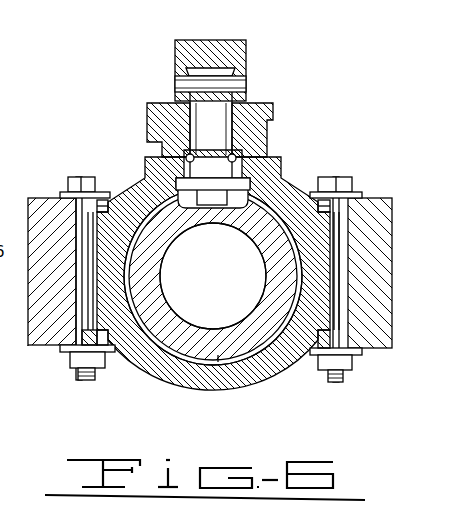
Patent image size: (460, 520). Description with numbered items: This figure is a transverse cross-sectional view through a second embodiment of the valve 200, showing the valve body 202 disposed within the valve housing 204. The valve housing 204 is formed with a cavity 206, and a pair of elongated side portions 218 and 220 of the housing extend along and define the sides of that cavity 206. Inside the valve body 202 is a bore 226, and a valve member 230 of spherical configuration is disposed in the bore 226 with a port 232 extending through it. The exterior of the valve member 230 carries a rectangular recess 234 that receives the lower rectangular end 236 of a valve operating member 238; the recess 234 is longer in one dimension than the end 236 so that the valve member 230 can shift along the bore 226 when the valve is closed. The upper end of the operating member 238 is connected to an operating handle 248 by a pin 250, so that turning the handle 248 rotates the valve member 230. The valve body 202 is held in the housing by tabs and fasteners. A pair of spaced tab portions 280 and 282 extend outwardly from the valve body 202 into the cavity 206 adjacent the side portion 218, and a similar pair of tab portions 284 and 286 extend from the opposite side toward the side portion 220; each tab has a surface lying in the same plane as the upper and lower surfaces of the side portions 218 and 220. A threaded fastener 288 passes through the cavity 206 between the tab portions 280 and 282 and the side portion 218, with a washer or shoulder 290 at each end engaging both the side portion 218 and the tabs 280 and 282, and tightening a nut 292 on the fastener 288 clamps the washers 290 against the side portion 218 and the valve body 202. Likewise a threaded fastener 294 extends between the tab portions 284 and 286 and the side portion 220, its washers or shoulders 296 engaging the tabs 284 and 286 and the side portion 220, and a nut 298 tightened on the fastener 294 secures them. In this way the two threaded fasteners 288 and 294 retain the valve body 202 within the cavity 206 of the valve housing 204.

The valve 200 is at (285, 47).
The valve body 202 is at (208, 385).
The valve housing 204 is at (40, 345).
The cavity 206 is at (97, 223).
The side portion 218 is at (50, 203).
The side portion 220 is at (372, 205).
The bore 226 is at (218, 362).
The valve member 230 is at (165, 326).
The port 232 is at (232, 280).
The rectangular recess 234 is at (178, 215).
The lower rectangular end 236 is at (207, 205).
The valve operating member 238 is at (215, 108).
The operating handle 248 is at (185, 55).
The pin 250 is at (185, 82).
The tab portion 280 is at (100, 206).
The tab portion 282 is at (100, 352).
The tab portion 284 is at (320, 208).
The tab portion 286 is at (325, 338).
The threaded fastener 288 is at (90, 380).
The washer 290 is at (80, 177).
The nut 292 is at (98, 366).
The threaded fastener 294 is at (336, 382).
The washer 296 is at (342, 186).
The nut 298 is at (320, 372).